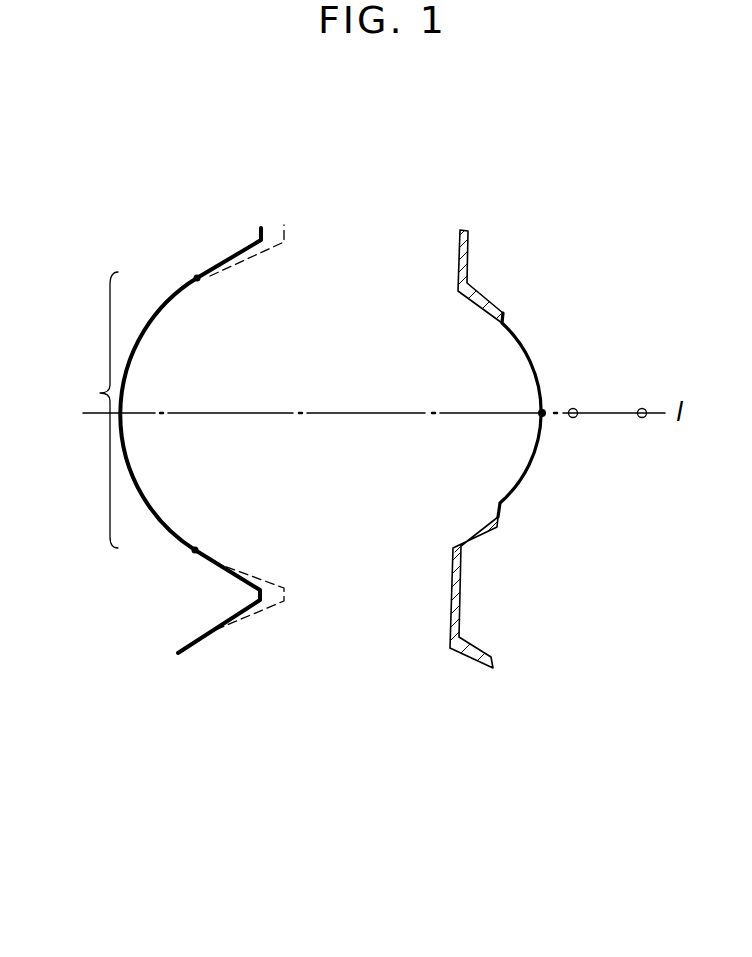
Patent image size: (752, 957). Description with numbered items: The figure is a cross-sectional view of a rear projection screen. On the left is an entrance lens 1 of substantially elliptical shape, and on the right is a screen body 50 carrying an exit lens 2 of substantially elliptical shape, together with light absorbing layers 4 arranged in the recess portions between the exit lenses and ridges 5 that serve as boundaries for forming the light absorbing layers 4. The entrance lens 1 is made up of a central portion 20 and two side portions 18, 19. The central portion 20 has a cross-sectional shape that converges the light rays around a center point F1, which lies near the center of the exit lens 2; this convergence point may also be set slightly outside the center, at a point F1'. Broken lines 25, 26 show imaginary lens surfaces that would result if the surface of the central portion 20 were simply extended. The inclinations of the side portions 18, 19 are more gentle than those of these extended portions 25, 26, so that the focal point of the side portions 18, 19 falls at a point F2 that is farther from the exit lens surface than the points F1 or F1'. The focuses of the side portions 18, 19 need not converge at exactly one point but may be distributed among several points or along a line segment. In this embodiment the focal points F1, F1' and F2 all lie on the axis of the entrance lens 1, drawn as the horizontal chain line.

The entrance lens 1 is at (128, 389).
The exit lens 2 is at (528, 470).
The light absorbing layers 4 is at (480, 530).
The ridges 5 is at (505, 315).
The side portion 18 is at (255, 235).
The side portion 19 is at (240, 596).
The central portion 20 is at (100, 393).
The broken line (imaginary lens surface) 25 is at (243, 257).
The broken line (imaginary lens surface) 26 is at (252, 578).
The screen body 50 is at (489, 419).
The center point F1 is at (556, 387).
The point F1' is at (595, 393).
The focal point F2 is at (642, 408).